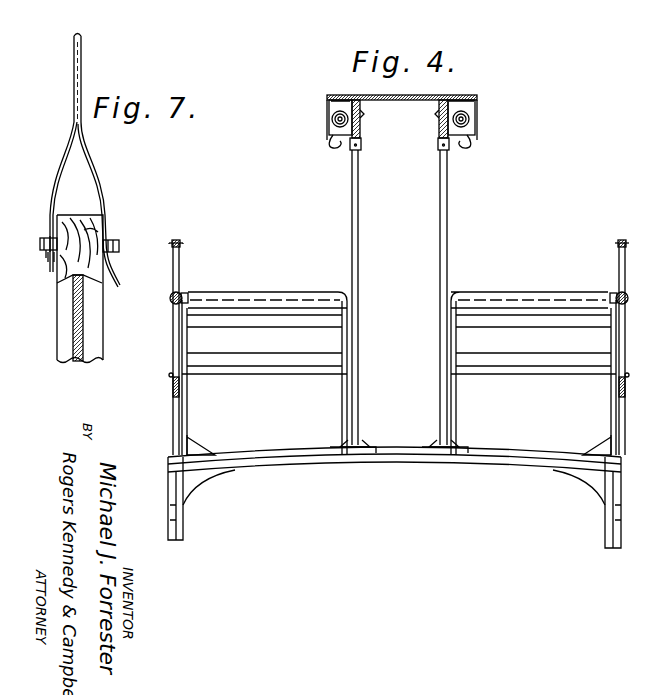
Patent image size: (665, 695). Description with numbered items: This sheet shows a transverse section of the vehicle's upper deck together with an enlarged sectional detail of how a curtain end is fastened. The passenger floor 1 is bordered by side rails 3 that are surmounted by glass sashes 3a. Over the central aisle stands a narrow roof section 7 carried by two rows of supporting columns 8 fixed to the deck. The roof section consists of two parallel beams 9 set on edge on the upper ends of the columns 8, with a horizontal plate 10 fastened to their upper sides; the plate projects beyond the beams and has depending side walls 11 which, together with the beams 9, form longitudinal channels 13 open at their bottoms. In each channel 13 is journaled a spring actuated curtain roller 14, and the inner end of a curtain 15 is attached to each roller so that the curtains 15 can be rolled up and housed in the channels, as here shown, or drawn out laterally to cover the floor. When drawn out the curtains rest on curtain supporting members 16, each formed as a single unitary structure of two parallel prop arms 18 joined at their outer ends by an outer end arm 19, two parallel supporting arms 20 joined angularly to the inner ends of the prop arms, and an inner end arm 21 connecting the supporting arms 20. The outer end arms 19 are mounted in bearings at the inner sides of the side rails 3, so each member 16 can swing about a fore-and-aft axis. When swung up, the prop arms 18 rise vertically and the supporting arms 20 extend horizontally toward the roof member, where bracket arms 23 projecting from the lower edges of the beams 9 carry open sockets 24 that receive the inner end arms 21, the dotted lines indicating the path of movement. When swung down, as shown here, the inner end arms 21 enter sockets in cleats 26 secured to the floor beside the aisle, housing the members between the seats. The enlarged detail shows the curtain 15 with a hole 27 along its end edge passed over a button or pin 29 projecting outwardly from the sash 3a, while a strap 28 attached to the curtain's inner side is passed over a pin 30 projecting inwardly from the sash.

In FIG. 4, the passenger floor 1 is at (345, 460).
In FIG. 4, the side rails 3 is at (173, 308).
In FIG. 7, the glass panels or sashes 3a is at (92, 293).
In FIG. 4, the glass panels or sashes 3a is at (180, 240).
In FIG. 4, the roof section or member 7 is at (402, 106).
In FIG. 4, the supporting columns 8 is at (438, 163).
In FIG. 4, the parallel beams 9 is at (438, 122).
In FIG. 4, the horizontal board or plate 10 is at (470, 98).
In FIG. 4, the depending side walls 11 is at (329, 108).
In FIG. 4, the longitudinal channels 13 is at (332, 97).
In FIG. 4, the spring actuated curtain roller 14 is at (345, 117).
In FIG. 7, the curtains 15 is at (74, 72).
In FIG. 4, the curtains 15 is at (332, 122).
In FIG. 4, the curtain supporting members 16 is at (355, 315).
In FIG. 4, the prop arms 18 is at (247, 297).
In FIG. 4, the outer end arm 19 is at (186, 296).
In FIG. 4, the supporting arms 20 is at (358, 359).
In FIG. 4, the inner end arm 21 is at (352, 446).
In FIG. 4, the bracket arms 23 is at (350, 132).
In FIG. 4, the open sockets 24 is at (332, 142).
In FIG. 4, the cleats 26 is at (440, 452).
In FIG. 7, the holes or eyes 27 is at (50, 236).
In FIG. 7, the straps 28 is at (105, 200).
In FIG. 7, the buttons or pins 29 is at (42, 250).
In FIG. 4, the buttons or pins 29 is at (171, 245).
In FIG. 7, the pins 30 is at (119, 244).
In FIG. 4, the pins 30 is at (185, 243).